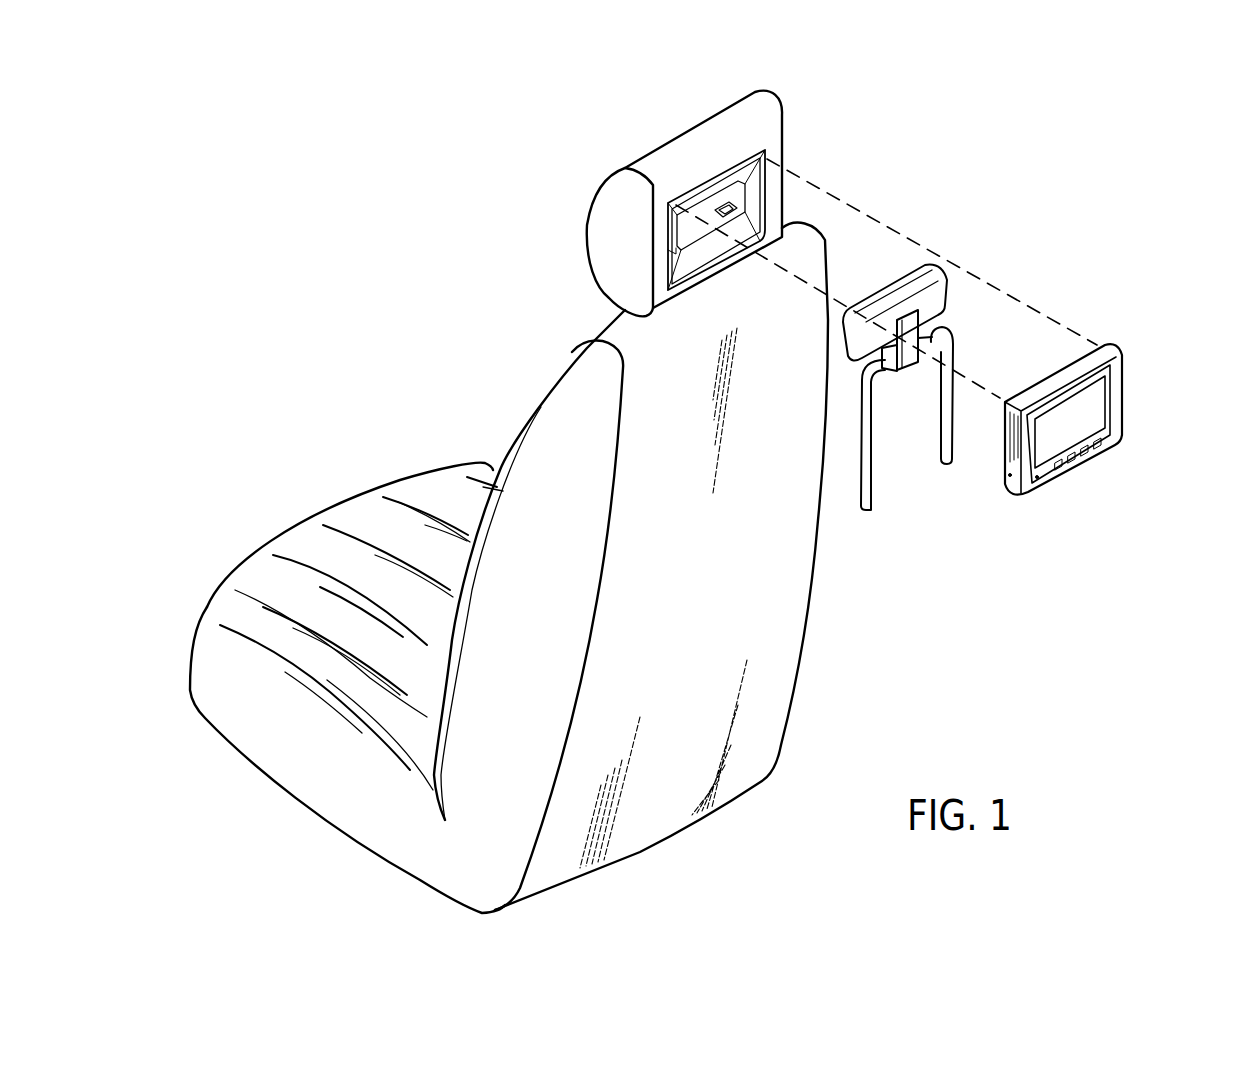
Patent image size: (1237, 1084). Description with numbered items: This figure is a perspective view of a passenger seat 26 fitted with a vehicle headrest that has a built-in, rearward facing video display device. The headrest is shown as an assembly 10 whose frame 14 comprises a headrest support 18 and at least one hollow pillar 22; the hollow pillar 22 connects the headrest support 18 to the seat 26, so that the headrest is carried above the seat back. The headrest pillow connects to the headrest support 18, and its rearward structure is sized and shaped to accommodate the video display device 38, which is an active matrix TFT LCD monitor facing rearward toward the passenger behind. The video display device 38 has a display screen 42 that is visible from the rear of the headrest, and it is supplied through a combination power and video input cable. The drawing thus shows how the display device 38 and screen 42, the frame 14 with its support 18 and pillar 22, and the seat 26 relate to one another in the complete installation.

The headrest 10 is at (780, 112).
The frame 14 is at (942, 300).
The headrest support 18 is at (927, 267).
The hollow pillar 22 is at (954, 440).
The seat 26 is at (812, 587).
The video display device 38 is at (1105, 351).
The display screen 42 is at (1113, 420).